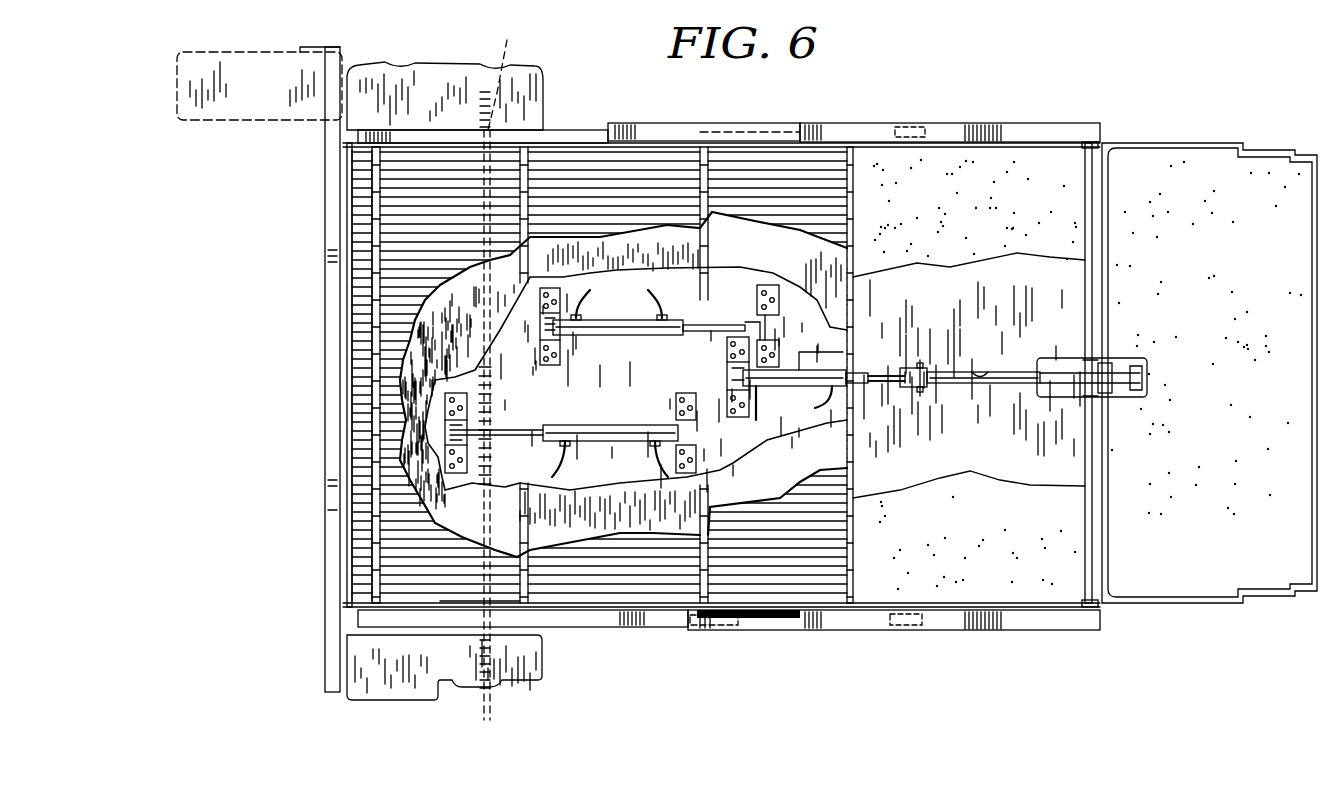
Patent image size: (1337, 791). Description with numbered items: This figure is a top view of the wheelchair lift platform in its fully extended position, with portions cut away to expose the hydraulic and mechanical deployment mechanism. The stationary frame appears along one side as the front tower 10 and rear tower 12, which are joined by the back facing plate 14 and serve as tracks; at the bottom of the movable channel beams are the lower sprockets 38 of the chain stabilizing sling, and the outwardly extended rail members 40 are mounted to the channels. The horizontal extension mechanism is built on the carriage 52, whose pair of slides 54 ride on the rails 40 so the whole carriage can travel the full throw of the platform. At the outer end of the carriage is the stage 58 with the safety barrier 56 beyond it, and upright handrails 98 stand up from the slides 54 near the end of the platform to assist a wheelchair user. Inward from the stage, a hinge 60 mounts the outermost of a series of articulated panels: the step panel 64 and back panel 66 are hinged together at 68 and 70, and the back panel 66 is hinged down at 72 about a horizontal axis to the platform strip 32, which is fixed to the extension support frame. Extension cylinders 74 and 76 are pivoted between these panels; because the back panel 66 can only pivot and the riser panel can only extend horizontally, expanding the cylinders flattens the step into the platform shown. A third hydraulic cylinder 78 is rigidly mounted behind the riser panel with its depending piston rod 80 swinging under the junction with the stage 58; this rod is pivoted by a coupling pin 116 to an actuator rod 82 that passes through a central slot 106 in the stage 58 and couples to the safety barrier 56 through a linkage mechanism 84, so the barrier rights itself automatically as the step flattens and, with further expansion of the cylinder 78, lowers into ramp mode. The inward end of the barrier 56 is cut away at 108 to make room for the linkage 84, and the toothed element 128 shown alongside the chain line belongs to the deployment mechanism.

The front tower 10 is at (548, 66).
The rear tower 12 is at (383, 707).
The back facing plate 14 is at (345, 272).
The platform strip 32 is at (367, 437).
The lower sprockets 38 is at (495, 715).
The rail members 40 is at (578, 131).
The carriage 52 is at (880, 128).
The slides 54 is at (660, 125).
The safety barrier 56 is at (1200, 192).
The stage 58 is at (940, 178).
The hinge 60 is at (853, 570).
The step panel 64 is at (670, 598).
The back panel 66 is at (470, 601).
The hinge 68 is at (712, 560).
The hinge 70 is at (530, 575).
The hinge 72 is at (376, 330).
The extension cylinder 74 is at (586, 330).
The extension cylinder 76 is at (618, 428).
The third hydraulic cylinder 78 is at (788, 370).
The piston rod 80 is at (885, 376).
The actuator rod 82 is at (990, 388).
The linkage mechanism 84 is at (1118, 398).
The handrails 98 is at (1010, 128).
The central slot 106 is at (982, 372).
The cut away 108 is at (1148, 378).
The coupling pin 116 is at (920, 396).
The rack 128 is at (492, 392).